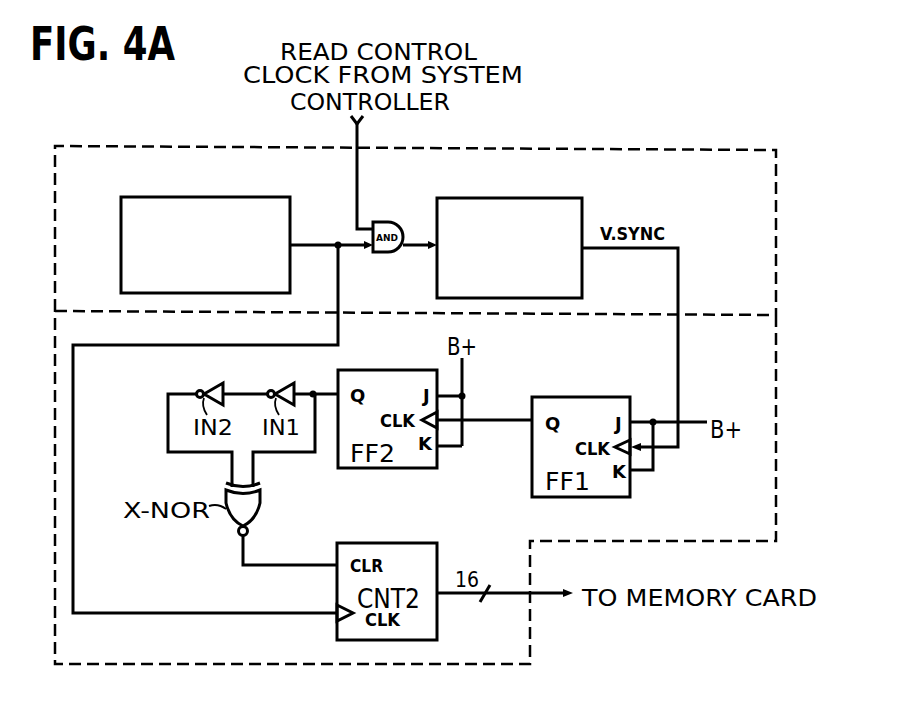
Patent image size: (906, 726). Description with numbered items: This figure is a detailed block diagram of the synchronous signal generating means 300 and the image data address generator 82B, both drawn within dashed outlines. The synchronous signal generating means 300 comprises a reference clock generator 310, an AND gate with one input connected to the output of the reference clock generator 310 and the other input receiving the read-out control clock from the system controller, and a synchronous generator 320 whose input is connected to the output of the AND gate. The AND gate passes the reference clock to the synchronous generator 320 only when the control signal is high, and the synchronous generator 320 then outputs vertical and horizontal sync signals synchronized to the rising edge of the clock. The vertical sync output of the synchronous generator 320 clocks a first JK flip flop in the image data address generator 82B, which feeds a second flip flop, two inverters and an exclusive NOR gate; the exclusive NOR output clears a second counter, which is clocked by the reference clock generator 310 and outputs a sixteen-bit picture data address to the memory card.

The synchronous signal generating means 300 is at (584, 148).
The reference clock generator 310 is at (243, 197).
The synchronous generator 320 is at (582, 210).
The image data address generator 82B is at (481, 664).